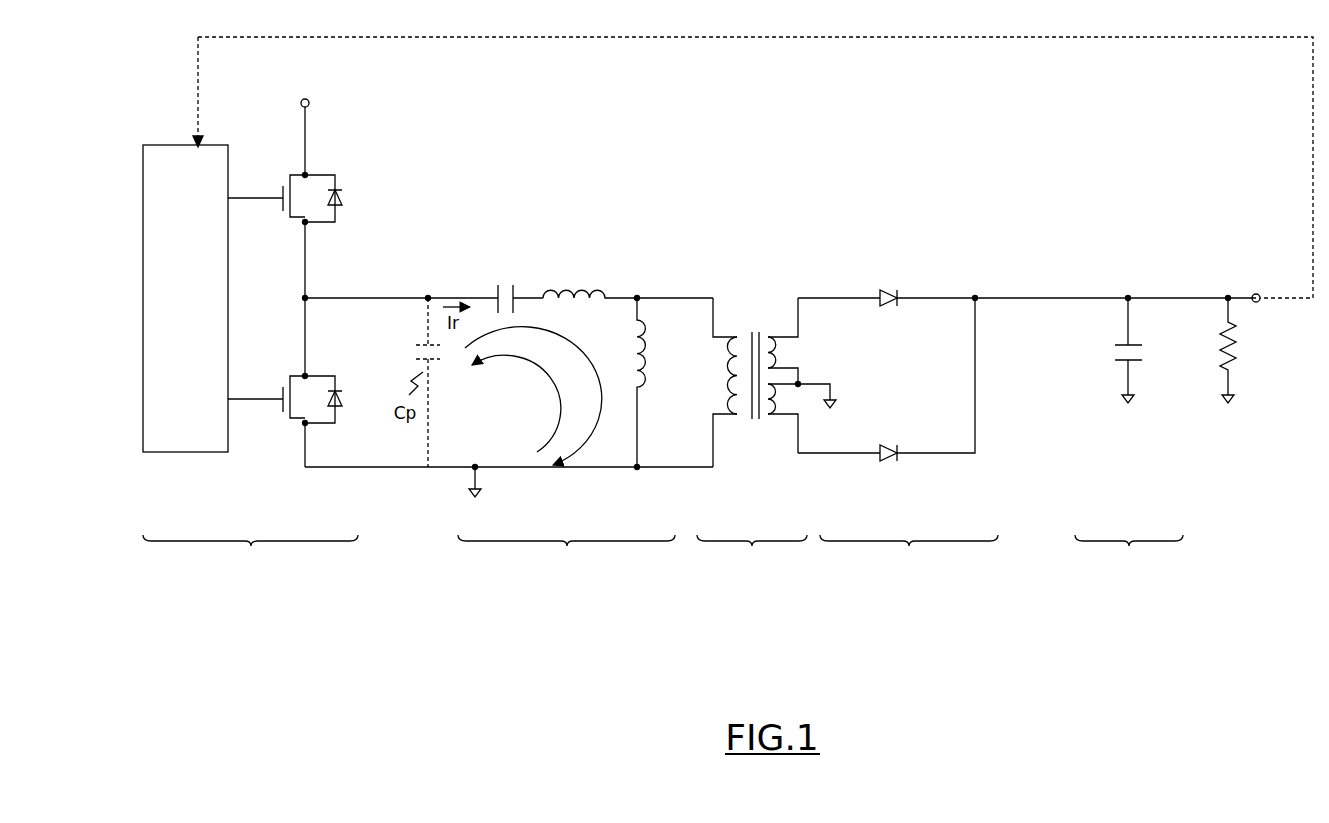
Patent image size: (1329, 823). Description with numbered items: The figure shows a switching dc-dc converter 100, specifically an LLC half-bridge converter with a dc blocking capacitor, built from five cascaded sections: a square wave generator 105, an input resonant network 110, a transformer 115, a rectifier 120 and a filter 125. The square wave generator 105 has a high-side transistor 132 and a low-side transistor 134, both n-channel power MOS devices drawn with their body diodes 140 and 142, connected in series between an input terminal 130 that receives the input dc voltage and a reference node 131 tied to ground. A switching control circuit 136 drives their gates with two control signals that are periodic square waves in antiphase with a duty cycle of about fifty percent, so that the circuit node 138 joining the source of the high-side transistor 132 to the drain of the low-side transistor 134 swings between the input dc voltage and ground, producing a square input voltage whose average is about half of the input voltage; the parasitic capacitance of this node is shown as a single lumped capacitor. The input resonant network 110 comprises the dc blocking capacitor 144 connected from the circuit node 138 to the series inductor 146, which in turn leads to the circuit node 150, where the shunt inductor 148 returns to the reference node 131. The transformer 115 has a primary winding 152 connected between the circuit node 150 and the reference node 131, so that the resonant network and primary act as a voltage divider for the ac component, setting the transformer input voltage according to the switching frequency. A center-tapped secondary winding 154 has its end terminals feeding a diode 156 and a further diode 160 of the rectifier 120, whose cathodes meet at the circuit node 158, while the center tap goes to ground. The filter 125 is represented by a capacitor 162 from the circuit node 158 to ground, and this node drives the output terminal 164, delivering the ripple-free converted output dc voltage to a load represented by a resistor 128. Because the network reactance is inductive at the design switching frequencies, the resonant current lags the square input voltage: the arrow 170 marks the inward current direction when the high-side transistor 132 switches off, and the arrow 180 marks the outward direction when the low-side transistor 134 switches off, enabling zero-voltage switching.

The switching dc-dc converter 100 is at (220, 665).
The square wave generator 105 is at (250, 560).
The input resonant network 110 is at (566, 560).
The transformer 115 is at (752, 560).
The rectifier 120 is at (909, 560).
The filter 125 is at (1129, 560).
The resistor 128 is at (1203, 357).
The input terminal 130 is at (327, 125).
The reference node 131 is at (491, 457).
The high-side transistor 132 is at (256, 227).
The low-side transistor 134 is at (256, 426).
The switching control circuit 136 is at (185, 325).
The circuit node 138 is at (401, 274).
The body diode 140 is at (348, 231).
The body diode 142 is at (332, 382).
The dc blocking capacitor 144 is at (522, 270).
The series inductor 146 is at (628, 262).
The shunt inductor 148 is at (670, 384).
The circuit node 150 is at (679, 274).
The primary winding 152 is at (740, 408).
The center-tapped secondary winding 154 is at (802, 413).
The diode 156 is at (1027, 273).
The circuit node 158 is at (1147, 275).
The further diode 160 is at (888, 407).
The capacitor 162 is at (1107, 357).
The output terminal 164 is at (1278, 305).
The arrow 170 is at (549, 387).
The arrow 180 is at (516, 403).